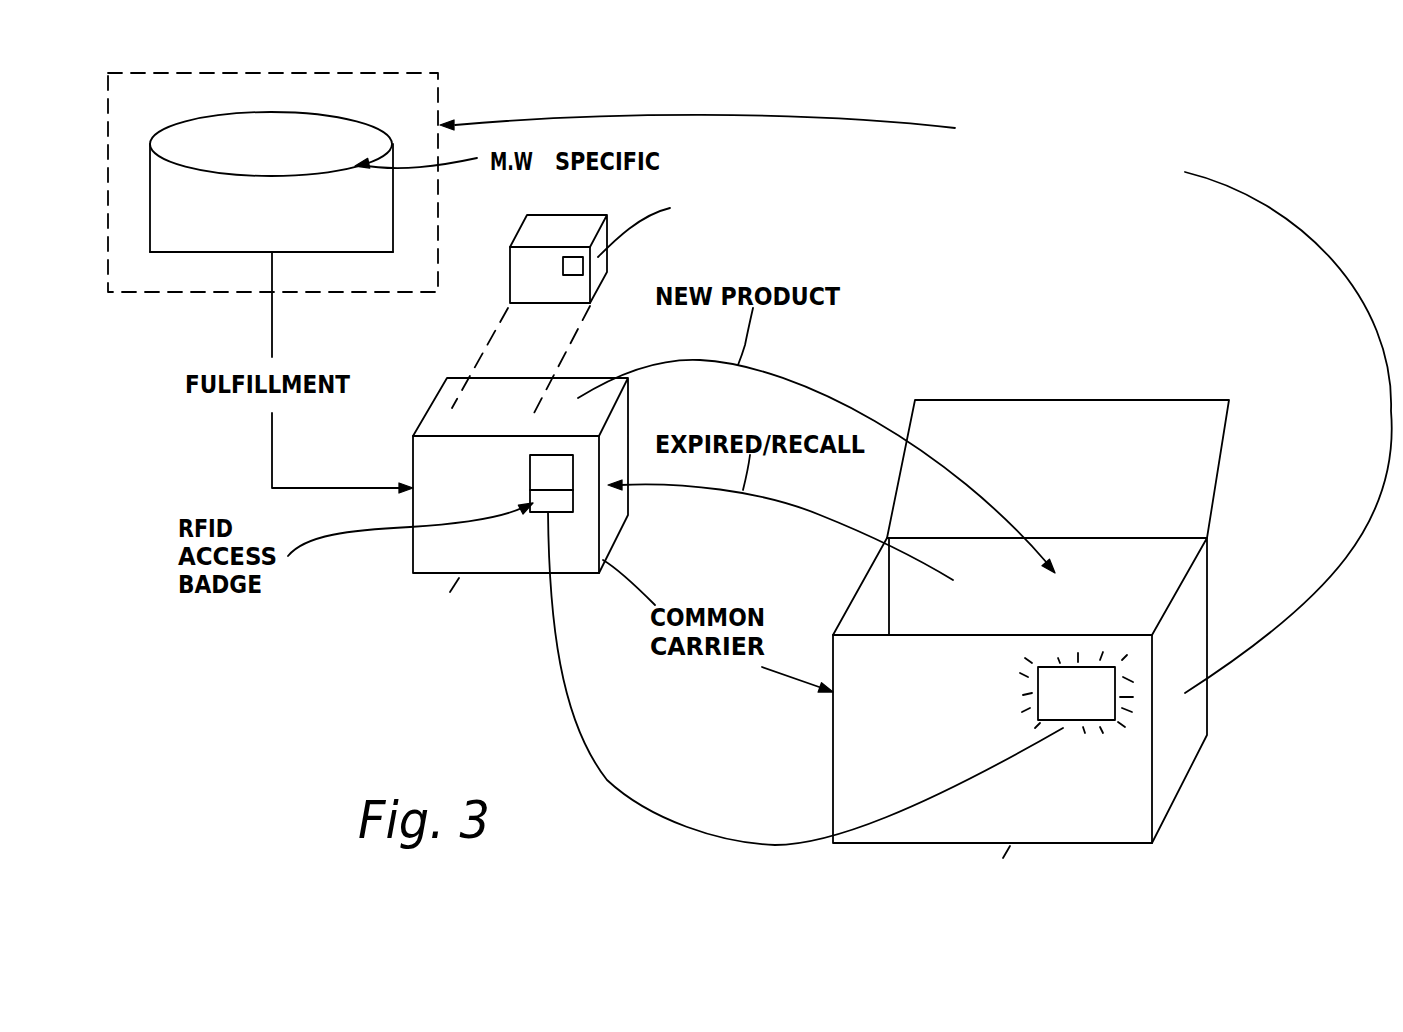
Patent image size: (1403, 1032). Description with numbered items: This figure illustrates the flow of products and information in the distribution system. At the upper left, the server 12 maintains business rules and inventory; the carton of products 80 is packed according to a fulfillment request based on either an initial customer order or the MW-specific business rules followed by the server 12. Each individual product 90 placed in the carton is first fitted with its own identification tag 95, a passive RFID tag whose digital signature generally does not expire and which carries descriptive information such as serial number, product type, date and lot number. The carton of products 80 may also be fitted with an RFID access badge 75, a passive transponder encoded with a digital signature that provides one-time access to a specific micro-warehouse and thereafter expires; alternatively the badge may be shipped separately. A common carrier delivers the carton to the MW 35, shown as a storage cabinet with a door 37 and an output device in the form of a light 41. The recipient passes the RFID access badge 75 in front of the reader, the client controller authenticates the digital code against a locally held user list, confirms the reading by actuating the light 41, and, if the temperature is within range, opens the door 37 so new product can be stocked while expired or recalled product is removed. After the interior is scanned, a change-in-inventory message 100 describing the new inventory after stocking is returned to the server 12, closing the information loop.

The server 12 is at (438, 92).
The individual product 90 is at (534, 213).
The identification tag 95 is at (563, 265).
The carton of products 80 is at (418, 450).
The RFID access badge 75 is at (573, 511).
The change-in-inventory message 100 is at (1354, 278).
The MW (micro-warehouse) 35 is at (1250, 687).
The door 37 is at (1125, 407).
The light 41 is at (1050, 697).